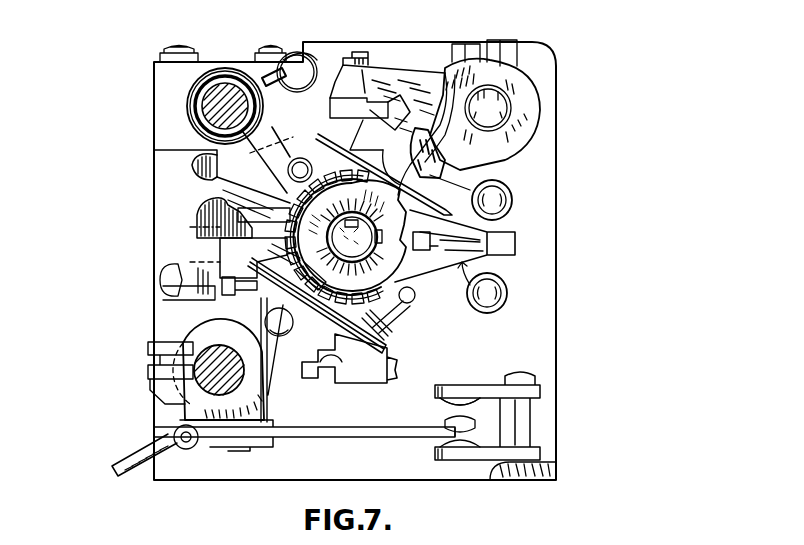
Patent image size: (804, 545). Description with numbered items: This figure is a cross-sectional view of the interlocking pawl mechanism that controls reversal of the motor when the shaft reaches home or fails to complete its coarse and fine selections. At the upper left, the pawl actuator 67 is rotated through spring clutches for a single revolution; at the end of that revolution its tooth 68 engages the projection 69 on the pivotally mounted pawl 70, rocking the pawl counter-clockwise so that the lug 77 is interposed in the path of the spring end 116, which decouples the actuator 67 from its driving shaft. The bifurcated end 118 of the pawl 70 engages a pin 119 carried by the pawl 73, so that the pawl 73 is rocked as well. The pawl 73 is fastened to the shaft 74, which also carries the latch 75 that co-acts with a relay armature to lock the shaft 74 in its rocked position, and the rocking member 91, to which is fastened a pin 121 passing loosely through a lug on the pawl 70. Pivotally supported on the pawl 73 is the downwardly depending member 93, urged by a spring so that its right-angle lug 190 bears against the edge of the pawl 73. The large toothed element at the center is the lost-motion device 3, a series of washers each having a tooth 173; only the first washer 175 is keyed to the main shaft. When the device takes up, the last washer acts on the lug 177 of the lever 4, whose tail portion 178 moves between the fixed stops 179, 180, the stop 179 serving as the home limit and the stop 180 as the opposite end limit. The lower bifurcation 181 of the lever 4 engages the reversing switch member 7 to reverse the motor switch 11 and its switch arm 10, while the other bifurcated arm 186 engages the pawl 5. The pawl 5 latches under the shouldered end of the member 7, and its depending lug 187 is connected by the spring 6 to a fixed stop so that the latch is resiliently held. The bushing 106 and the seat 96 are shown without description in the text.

The lost-motion device 3 is at (326, 231).
The lever 4 is at (469, 273).
The pawl 5 is at (220, 262).
The spring 6 is at (390, 338).
The reversing switch member 7 is at (195, 236).
The switch arm 10 is at (338, 438).
The motor switch 11 is at (492, 378).
The pawl actuator 67 is at (196, 140).
The tooth 68 is at (205, 165).
The projection 69 is at (222, 190).
The pawl 70 is at (228, 201).
The pawl 73 is at (392, 74).
The shaft 74 is at (205, 392).
The latch 75 is at (448, 100).
The lug 77 is at (298, 54).
The rocking member 91 is at (280, 368).
The depending member 93 is at (288, 166).
The spring seat 96 is at (437, 393).
The bushing 106 is at (225, 100).
The spring end 116 is at (262, 74).
The bifurcated end 118 is at (465, 175).
The pin 119 is at (442, 160).
The pin 121 is at (292, 330).
The tooth 173 is at (384, 174).
The first washer 175 is at (372, 278).
The lug 177 is at (430, 250).
The tail portion 178 is at (515, 247).
The fixed stop 179 is at (512, 201).
The fixed stop 180 is at (507, 296).
The lower bifurcation 181 is at (296, 306).
The bifurcated arm 186 is at (190, 227).
The depending lug 187 is at (410, 306).
The right-angle lug 190 is at (362, 52).